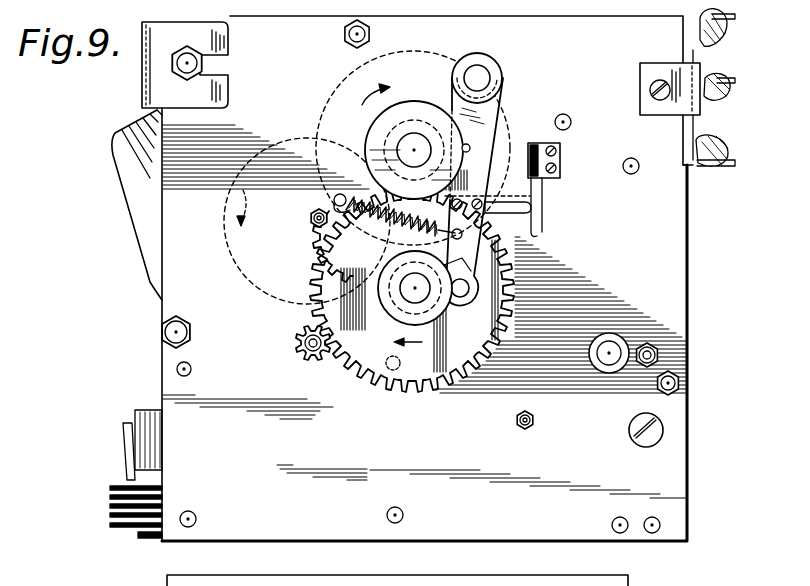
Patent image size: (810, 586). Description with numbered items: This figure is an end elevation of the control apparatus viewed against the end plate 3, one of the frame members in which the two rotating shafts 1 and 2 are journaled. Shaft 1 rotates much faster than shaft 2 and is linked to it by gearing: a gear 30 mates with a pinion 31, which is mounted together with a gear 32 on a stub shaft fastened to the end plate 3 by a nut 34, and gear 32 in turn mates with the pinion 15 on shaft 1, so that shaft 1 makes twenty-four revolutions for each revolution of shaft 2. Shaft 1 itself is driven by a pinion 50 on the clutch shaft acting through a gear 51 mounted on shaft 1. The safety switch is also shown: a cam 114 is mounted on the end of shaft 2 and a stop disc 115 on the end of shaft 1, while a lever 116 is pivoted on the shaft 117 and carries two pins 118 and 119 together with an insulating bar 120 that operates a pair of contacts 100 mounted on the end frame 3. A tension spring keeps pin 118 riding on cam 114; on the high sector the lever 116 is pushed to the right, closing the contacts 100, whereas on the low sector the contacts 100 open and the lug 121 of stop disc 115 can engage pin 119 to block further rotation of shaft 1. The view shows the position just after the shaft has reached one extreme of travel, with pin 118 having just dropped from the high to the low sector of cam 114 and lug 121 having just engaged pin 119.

The shaft 1 is at (425, 305).
The shaft 2 is at (410, 148).
The end plate 3 is at (660, 252).
The pinion 15 is at (400, 300).
The gear 30 is at (422, 50).
The pinion 31 is at (310, 232).
The gear 32 is at (238, 244).
The nut 34 is at (307, 218).
The pinion 50 is at (308, 359).
The gear 51 is at (404, 378).
The contacts 100 is at (535, 232).
The cam 114 is at (430, 105).
The stop disc 115 is at (405, 325).
The lever 116 is at (482, 133).
The shaft 117 is at (478, 82).
The pin 118 is at (470, 148).
The pin 119 is at (463, 300).
The insulating bar 120 is at (518, 208).
The lug 121 is at (463, 272).